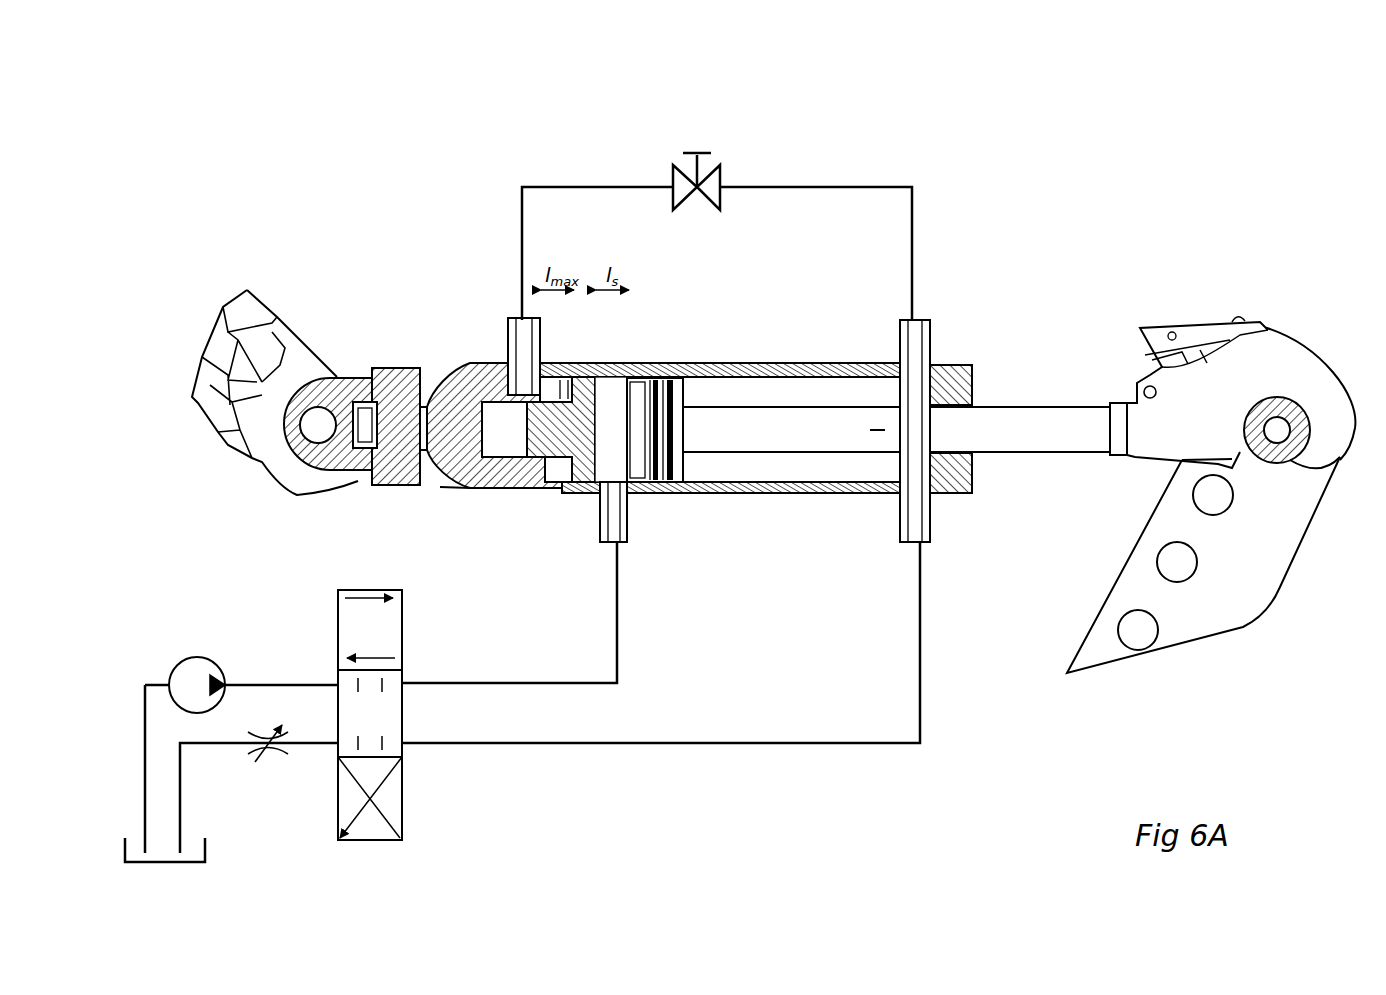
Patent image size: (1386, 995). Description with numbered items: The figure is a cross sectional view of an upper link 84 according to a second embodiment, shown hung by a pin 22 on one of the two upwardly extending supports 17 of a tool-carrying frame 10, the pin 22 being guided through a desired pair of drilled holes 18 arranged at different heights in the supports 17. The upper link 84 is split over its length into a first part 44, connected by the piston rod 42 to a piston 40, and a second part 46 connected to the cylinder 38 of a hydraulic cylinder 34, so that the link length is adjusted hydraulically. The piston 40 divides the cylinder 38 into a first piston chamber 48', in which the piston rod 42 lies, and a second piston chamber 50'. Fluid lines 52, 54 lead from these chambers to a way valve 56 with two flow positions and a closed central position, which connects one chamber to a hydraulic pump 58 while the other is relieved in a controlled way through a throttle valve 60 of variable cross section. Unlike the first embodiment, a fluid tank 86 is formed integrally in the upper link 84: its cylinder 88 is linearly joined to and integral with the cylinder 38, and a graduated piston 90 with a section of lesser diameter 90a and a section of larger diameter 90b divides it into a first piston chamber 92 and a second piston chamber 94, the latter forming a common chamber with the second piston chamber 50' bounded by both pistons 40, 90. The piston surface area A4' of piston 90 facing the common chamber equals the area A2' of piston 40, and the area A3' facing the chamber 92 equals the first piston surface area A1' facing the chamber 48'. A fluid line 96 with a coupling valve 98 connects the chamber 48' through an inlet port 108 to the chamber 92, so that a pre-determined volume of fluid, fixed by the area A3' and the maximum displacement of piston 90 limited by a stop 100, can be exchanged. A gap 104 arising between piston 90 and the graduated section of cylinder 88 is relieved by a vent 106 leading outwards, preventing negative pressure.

The tool-carrying frame 10 is at (1258, 592).
The supports 17 is at (1272, 540).
The drilled holes 18 is at (1140, 640).
The pin 22 is at (1290, 455).
The hydraulic cylinder 34 is at (768, 362).
The cylinder 38 is at (816, 495).
The piston 40 is at (643, 372).
The piston rod 42 is at (857, 432).
The first part 44 is at (1095, 418).
The second part 46 is at (423, 362).
The first piston chamber 48' is at (917, 430).
The second piston chamber 50' is at (648, 386).
The fluid line 52 is at (526, 683).
The fluid line 54 is at (570, 743).
The 4/3 way valve 56 is at (405, 793).
The hydraulic pump 58 is at (197, 657).
The throttle valve 60 is at (272, 760).
The upper link 84 is at (988, 503).
The fluid tank 86 is at (470, 487).
The cylinder 88 is at (493, 488).
The piston 90 is at (562, 362).
The section of lesser diameter 90a is at (527, 455).
The section of larger diameter 90b is at (598, 372).
The first piston chamber 92 is at (467, 467).
The second piston chamber 94 is at (610, 372).
The fluid line 96 is at (840, 187).
The coupling valve 98 is at (720, 172).
The stop 100 is at (590, 493).
The gap 104 is at (538, 490).
The vent 106 is at (557, 493).
The inlet port 108 is at (516, 320).
The first piston surface area A1' is at (738, 466).
The piston surface area A2' is at (653, 458).
The piston surface area A3' is at (492, 367).
The piston surface area A4' is at (652, 546).